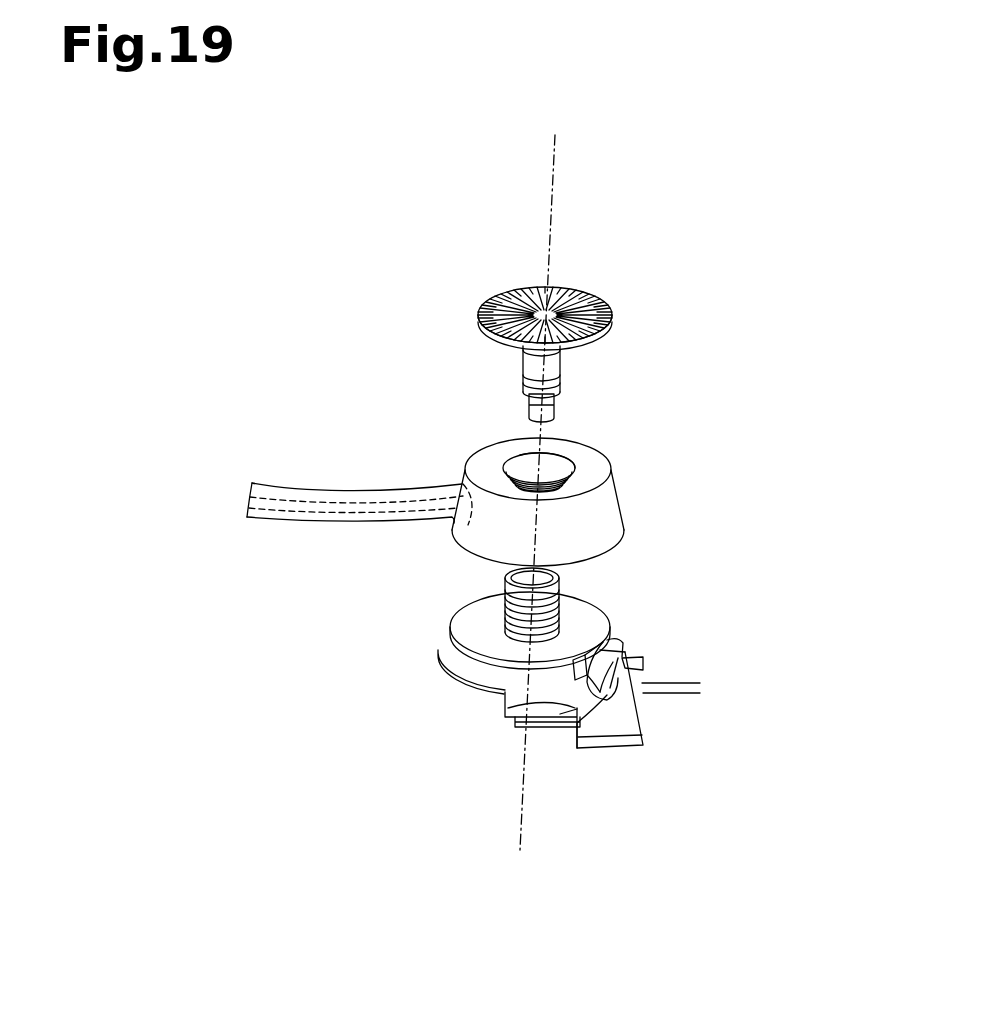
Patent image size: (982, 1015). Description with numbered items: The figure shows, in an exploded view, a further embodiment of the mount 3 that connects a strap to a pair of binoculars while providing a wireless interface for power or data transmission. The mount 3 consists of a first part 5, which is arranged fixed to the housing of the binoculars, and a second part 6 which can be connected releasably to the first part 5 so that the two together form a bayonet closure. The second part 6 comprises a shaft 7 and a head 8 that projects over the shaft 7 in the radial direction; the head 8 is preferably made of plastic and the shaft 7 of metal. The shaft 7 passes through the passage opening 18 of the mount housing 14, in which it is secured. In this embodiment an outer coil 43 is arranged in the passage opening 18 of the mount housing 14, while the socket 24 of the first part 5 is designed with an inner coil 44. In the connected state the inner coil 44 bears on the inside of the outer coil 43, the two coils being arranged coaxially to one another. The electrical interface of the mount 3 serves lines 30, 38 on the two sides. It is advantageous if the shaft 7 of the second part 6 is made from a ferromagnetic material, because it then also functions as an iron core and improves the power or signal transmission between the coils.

The mount 3 is at (222, 355).
The first part 5 is at (663, 733).
The second part 6 is at (645, 293).
The shaft 7 is at (504, 363).
The head 8 is at (476, 305).
The mount housing 14 is at (640, 510).
The passage opening 18 is at (488, 452).
The socket 24 is at (494, 575).
The lines 30 is at (275, 503).
The lines 38 is at (690, 680).
The outer coil 43 is at (531, 448).
The inner coil 44 is at (578, 626).